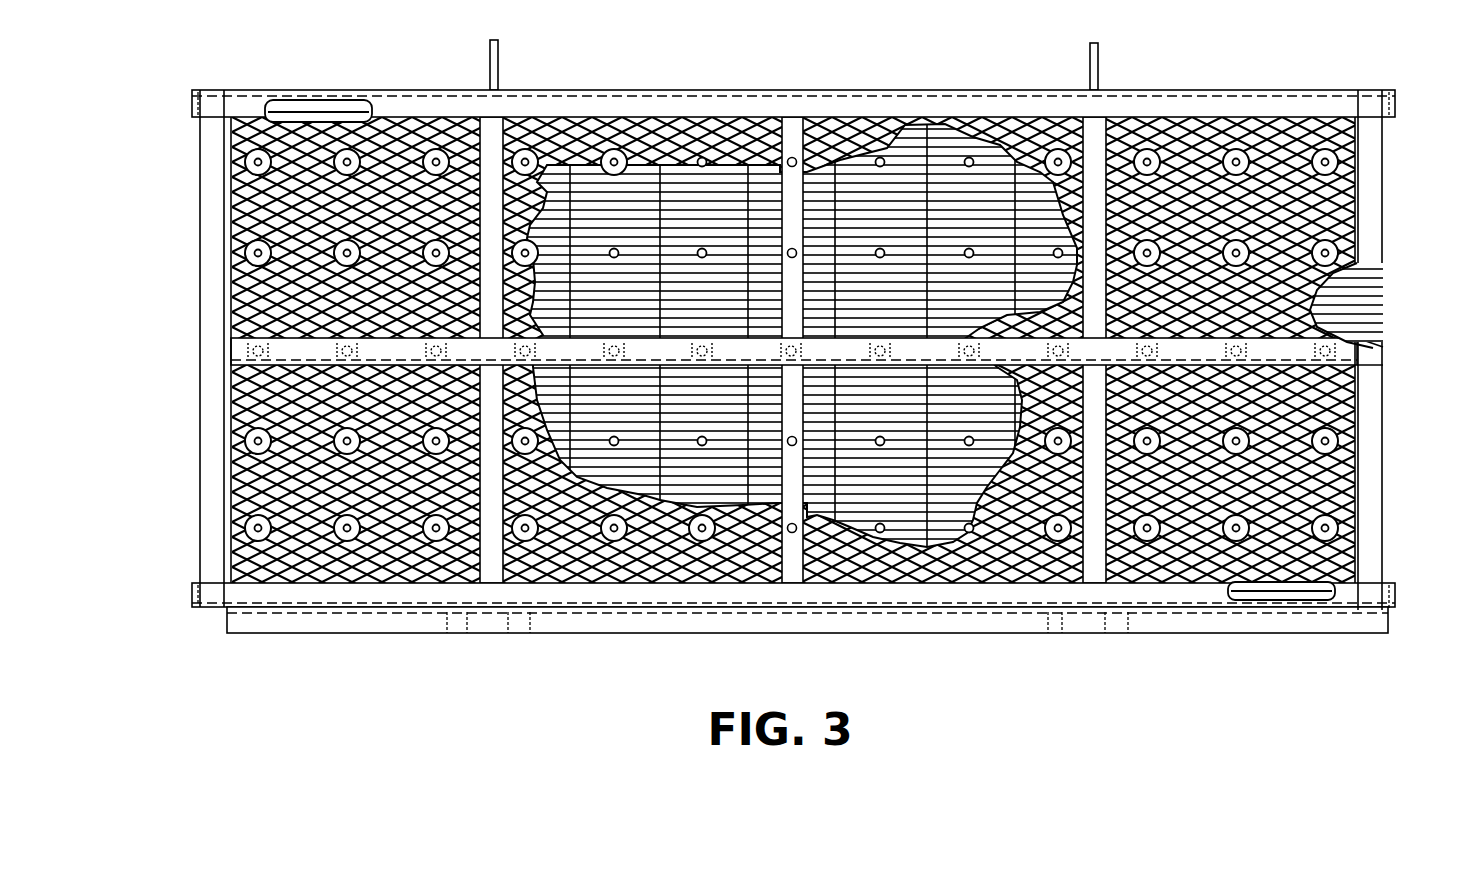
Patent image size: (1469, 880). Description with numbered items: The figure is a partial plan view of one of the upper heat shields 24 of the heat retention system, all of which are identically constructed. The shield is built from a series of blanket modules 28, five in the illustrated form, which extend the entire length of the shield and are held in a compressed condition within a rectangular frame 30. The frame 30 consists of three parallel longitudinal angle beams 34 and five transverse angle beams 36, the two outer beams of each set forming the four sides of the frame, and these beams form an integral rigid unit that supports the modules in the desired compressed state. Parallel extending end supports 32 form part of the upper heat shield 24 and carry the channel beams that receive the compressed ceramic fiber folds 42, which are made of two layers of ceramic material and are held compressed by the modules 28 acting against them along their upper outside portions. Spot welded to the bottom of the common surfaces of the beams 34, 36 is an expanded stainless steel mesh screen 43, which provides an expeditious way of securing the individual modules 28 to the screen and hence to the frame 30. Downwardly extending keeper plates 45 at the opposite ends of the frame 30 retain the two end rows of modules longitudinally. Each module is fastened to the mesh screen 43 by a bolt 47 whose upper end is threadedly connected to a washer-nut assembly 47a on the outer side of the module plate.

The upper heat shield 24 is at (787, 364).
The blanket module 28 is at (903, 158).
The frame 30 is at (787, 364).
The end support 32 is at (643, 90).
The longitudinal angle beam 34 is at (725, 93).
The transverse angle beam 36 is at (213, 198).
The ceramic fiber fold 42 is at (338, 108).
The expanded stainless steel mesh screen 43 is at (245, 498).
The keeper plate 45 is at (200, 456).
The bolt 47 is at (1327, 158).
The washer-nut assembly 47a is at (1322, 158).